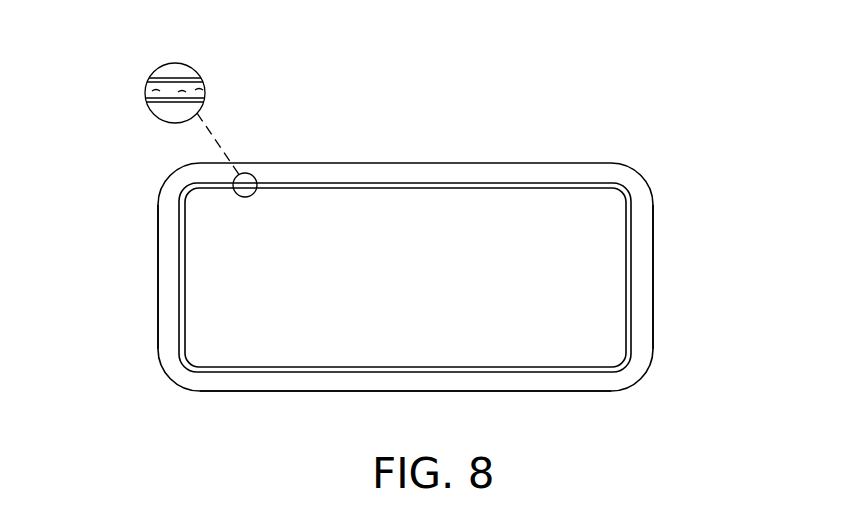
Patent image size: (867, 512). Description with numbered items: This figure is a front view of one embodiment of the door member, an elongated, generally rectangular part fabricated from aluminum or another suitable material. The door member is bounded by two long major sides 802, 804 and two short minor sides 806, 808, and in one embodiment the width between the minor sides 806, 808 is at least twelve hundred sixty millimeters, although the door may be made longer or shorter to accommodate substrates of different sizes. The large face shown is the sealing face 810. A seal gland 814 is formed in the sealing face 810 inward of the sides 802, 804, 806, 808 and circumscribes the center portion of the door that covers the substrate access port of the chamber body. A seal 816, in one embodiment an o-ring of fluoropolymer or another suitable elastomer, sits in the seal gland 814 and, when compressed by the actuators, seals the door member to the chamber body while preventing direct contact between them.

The major side 802 is at (457, 163).
The major side 804 is at (512, 391).
The minor side 806 is at (158, 300).
The minor side 808 is at (653, 300).
The sealing face 810 is at (590, 273).
The seal gland 814 is at (178, 82).
The seal 816 is at (167, 95).